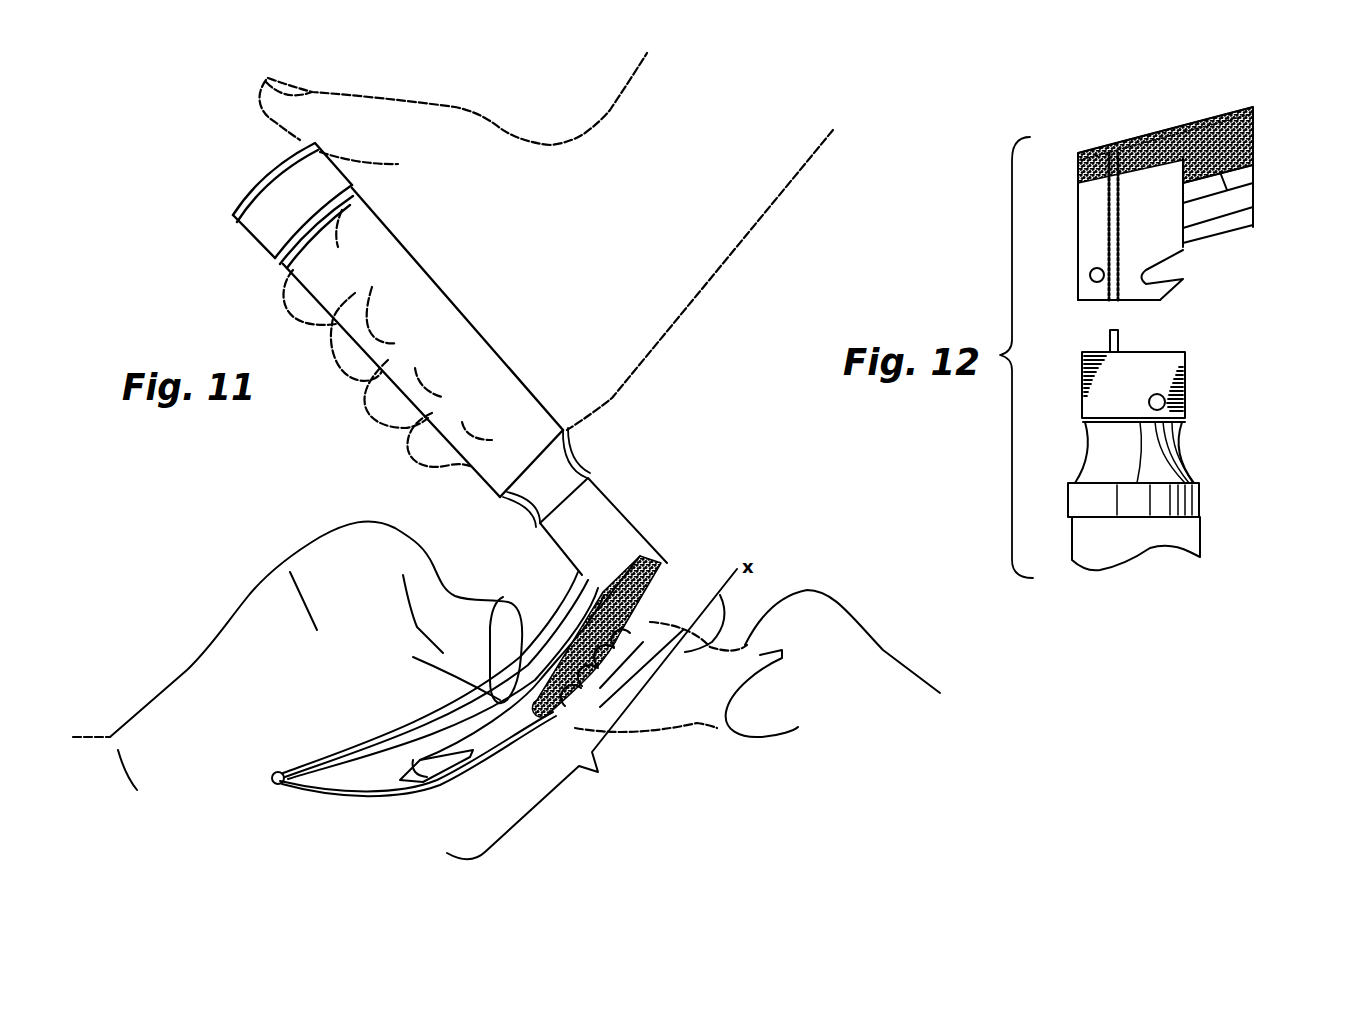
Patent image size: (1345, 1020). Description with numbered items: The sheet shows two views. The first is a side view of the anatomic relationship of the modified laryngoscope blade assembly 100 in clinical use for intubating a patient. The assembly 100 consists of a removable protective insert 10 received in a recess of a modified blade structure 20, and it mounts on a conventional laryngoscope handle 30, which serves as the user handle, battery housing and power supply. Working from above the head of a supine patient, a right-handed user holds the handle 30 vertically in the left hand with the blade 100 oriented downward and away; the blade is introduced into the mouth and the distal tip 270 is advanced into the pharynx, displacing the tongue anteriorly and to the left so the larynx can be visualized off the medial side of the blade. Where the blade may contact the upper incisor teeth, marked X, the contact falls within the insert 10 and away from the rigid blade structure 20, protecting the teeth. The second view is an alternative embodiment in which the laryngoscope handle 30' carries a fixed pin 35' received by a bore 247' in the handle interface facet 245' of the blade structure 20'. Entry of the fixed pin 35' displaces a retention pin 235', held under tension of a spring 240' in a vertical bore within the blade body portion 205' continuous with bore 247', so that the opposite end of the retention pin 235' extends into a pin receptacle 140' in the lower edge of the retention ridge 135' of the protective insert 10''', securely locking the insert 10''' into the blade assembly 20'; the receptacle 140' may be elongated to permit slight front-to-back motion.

In FIG. 11, the removable protective insert 10 is at (668, 544).
In FIG. 11, the modified blade structure 20 is at (470, 660).
In FIG. 11, the conventional laryngoscope handle 30 is at (420, 335).
In FIG. 11, the modified laryngoscope blade assembly 100 is at (592, 714).
In FIG. 11, the distal tip 270 is at (281, 773).
In FIG. 12, the protective insert 10''' is at (1165, 172).
In FIG. 12, the blade structure 20' is at (1177, 108).
In FIG. 12, the laryngoscope handle 30' is at (1185, 483).
In FIG. 12, the fixed pin 35' is at (1180, 378).
In FIG. 12, the retention ridge 135' is at (1075, 190).
In FIG. 12, the pin receptacle 140' is at (1211, 224).
In FIG. 12, the blade body portion 205' is at (1087, 240).
In FIG. 12, the retention pin 235' is at (1224, 232).
In FIG. 12, the spring 240' is at (1218, 275).
In FIG. 12, the handle interface facet 245' is at (1210, 305).
In FIG. 12, the bore 247' is at (1075, 331).